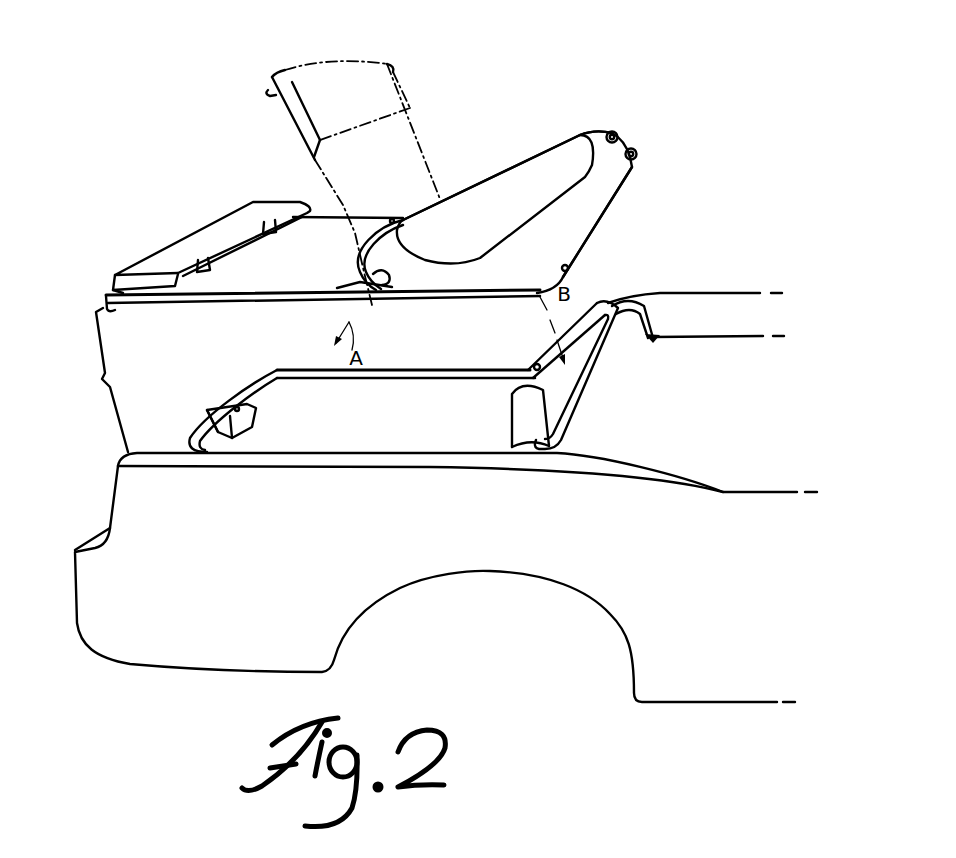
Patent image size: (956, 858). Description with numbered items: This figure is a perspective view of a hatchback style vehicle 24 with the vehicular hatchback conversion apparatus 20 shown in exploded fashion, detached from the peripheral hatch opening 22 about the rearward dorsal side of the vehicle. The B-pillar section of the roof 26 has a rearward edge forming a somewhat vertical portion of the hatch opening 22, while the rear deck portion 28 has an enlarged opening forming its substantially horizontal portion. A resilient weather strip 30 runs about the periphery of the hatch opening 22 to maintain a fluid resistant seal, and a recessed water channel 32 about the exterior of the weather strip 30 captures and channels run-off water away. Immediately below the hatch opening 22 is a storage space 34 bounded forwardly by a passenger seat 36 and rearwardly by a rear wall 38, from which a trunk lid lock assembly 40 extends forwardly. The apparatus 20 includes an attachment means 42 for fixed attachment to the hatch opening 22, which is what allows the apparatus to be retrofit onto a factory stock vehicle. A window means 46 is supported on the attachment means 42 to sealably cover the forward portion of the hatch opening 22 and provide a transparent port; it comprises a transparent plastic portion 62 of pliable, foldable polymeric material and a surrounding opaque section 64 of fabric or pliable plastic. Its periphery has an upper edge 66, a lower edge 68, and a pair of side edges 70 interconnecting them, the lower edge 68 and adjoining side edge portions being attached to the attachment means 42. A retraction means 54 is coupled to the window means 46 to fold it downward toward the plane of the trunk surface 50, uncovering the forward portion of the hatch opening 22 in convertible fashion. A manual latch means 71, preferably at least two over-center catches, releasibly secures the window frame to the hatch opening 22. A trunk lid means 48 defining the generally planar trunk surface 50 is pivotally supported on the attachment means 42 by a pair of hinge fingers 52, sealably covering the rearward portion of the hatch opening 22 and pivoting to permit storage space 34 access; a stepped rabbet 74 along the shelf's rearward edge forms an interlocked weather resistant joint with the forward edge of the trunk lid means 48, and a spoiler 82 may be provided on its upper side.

The vehicular hatchback conversion apparatus 20 is at (552, 158).
The peripheral hatch opening 22 is at (531, 367).
The hatchback style vehicle 24 is at (743, 293).
The B-pillar section of the roof 26 is at (674, 342).
The rear deck portion 28 is at (128, 454).
The weather strip 30 is at (603, 300).
The recessed water channel 32 is at (636, 318).
The storage space 34 is at (282, 397).
The passenger seat 36 is at (520, 418).
The rear wall 38 is at (268, 396).
The trunk lid lock assembly 40 is at (223, 430).
The attachment means 42 is at (473, 302).
The window means 46 is at (531, 158).
The trunk lid means 48 is at (434, 165).
The trunk surface 50 is at (227, 278).
The hinge fingers 52 is at (378, 290).
The retraction means 54 is at (602, 217).
The transparent plastic portion 62 is at (477, 200).
The opaque section 64 is at (607, 183).
The upper edge 66 is at (592, 131).
The lower edge 68 is at (390, 219).
The side edges 70 is at (561, 266).
The latch means 71 is at (619, 135).
The stepped rabbet 74 is at (357, 253).
The spoiler 82 is at (390, 62).